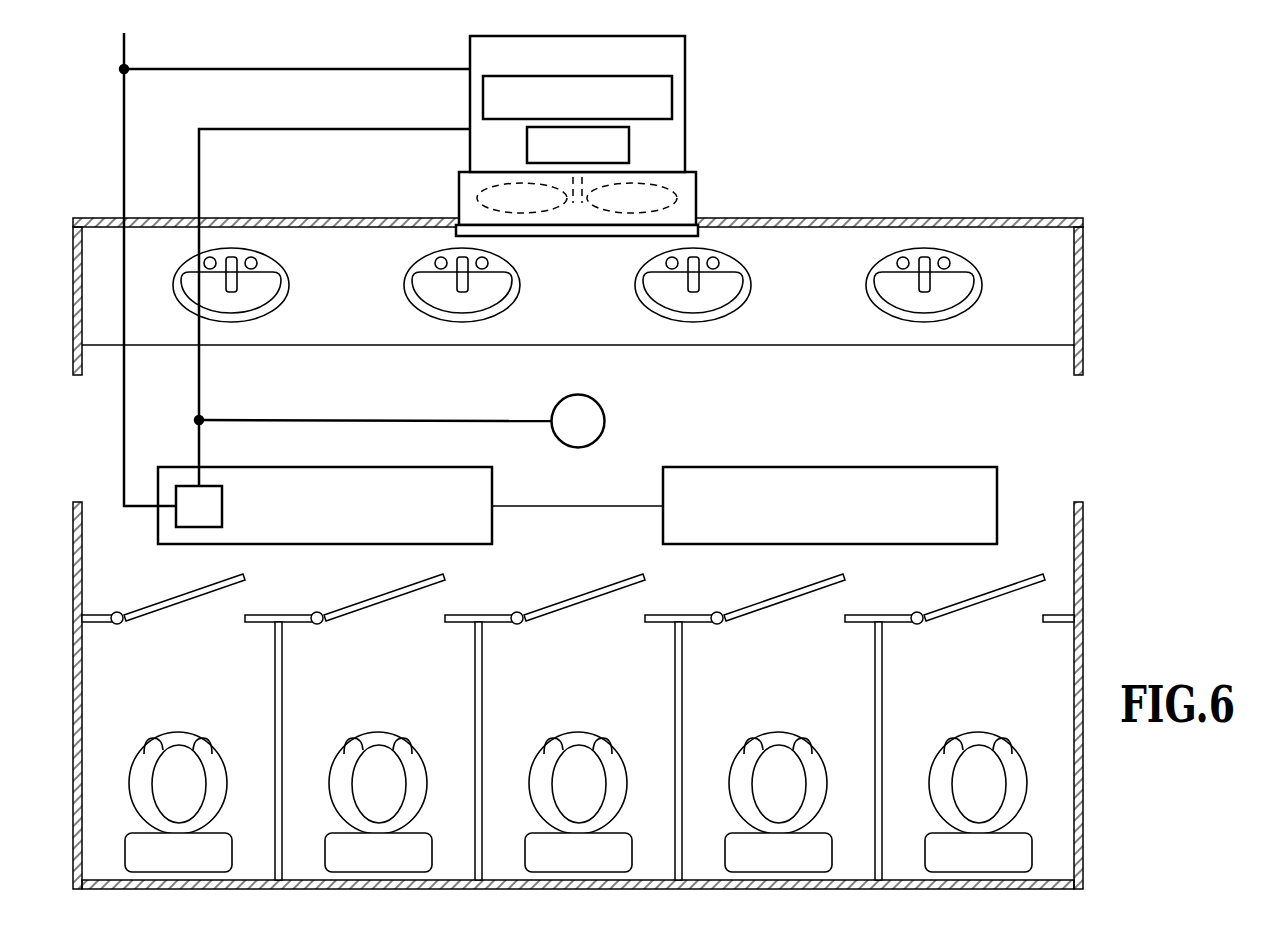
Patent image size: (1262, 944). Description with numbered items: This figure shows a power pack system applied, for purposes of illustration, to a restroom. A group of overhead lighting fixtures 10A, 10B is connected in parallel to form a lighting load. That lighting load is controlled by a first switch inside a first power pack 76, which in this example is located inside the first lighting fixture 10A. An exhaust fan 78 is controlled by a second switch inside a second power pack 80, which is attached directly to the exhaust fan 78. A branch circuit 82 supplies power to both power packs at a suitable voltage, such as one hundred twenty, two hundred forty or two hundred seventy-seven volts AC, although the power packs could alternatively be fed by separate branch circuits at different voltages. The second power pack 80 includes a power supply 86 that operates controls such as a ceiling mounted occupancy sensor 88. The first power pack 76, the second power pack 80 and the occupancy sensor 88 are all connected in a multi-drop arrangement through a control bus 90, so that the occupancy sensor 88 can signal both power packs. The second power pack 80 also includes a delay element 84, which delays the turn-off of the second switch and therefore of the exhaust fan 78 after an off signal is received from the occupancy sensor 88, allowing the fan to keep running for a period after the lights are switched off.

The first lighting fixture 10A is at (343, 517).
The overhead lighting fixture 10B is at (848, 518).
The first power pack 76 is at (223, 507).
The exhaust fan 78 is at (697, 195).
The second power pack 80 is at (470, 100).
The branch circuit 82 is at (122, 167).
The delay element 84 is at (630, 143).
The power supply 86 is at (672, 97).
The occupancy sensor 88 is at (605, 421).
The control bus 90 is at (200, 167).